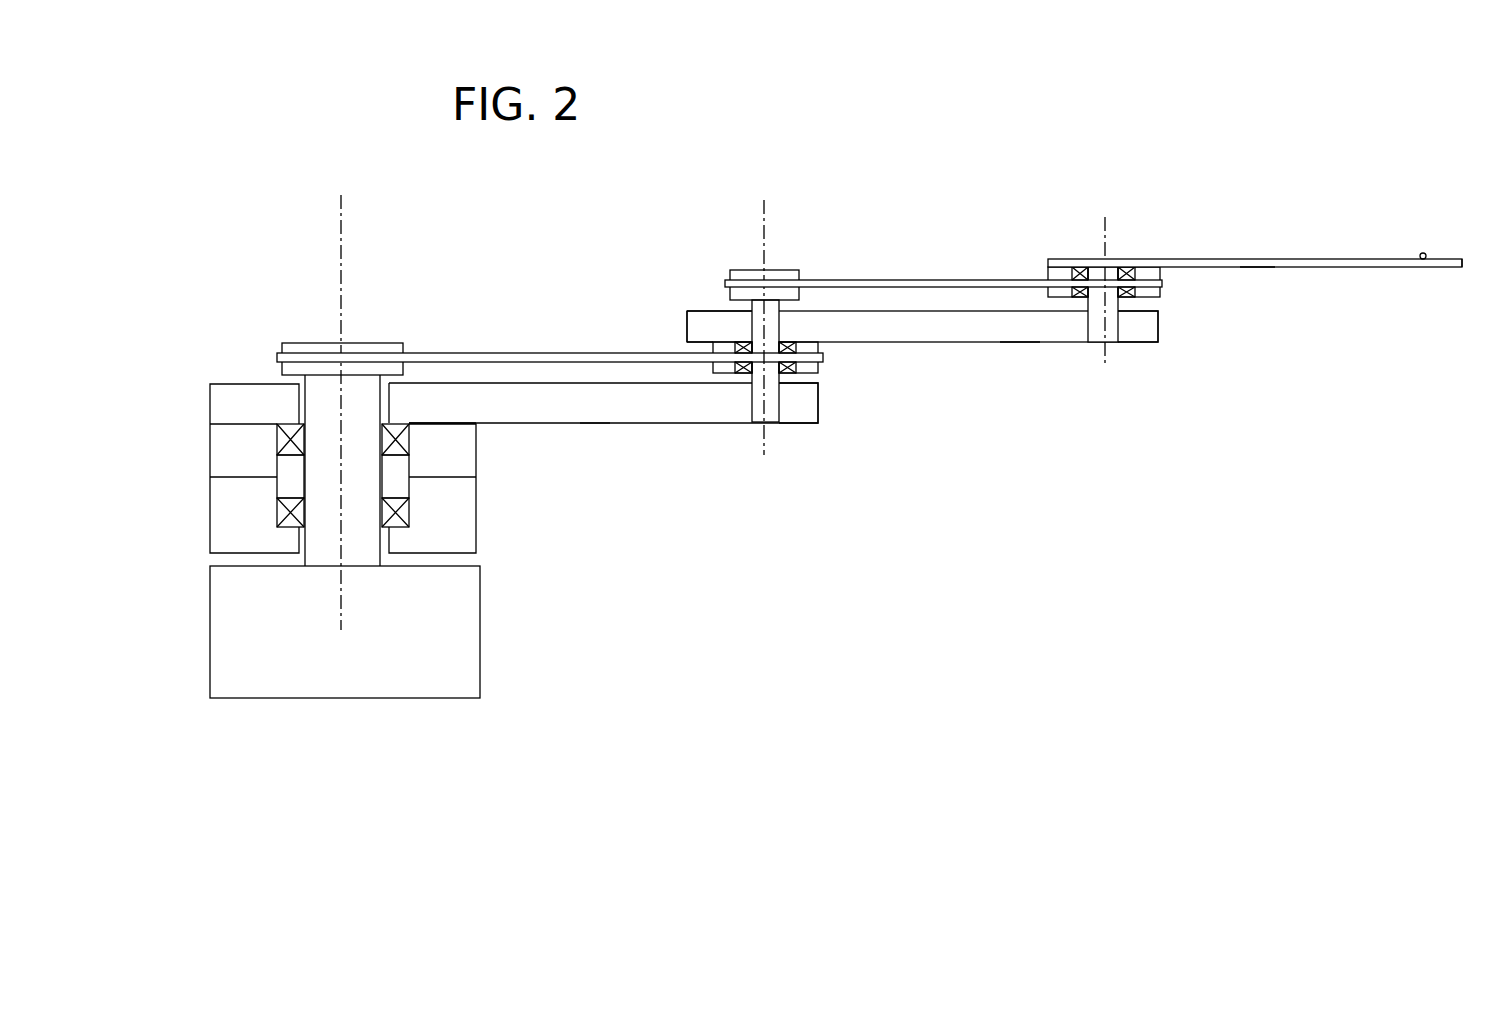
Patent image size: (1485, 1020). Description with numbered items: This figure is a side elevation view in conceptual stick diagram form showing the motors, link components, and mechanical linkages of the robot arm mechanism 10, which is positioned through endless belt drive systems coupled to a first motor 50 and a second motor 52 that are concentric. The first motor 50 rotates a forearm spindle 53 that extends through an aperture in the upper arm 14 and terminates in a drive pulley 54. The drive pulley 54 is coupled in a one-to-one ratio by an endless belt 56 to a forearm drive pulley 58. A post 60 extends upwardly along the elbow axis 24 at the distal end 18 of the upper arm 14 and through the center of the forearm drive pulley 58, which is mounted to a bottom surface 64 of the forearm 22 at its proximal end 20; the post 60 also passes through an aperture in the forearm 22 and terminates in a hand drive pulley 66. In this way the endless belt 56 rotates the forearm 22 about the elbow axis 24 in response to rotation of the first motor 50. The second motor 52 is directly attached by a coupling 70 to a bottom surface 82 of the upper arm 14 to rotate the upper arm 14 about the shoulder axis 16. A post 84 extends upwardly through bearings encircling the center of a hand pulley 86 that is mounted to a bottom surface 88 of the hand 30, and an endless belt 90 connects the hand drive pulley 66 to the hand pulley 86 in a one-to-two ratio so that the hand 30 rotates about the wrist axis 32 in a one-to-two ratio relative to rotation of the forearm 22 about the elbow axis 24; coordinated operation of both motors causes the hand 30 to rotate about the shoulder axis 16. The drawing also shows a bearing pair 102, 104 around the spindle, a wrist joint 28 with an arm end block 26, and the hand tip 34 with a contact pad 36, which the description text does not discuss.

The robot arm mechanism 10 is at (617, 634).
The upper arm 14 is at (667, 412).
The shoulder axis 16 is at (341, 209).
The distal end 18 is at (823, 417).
The proximal end 20 is at (688, 322).
The forearm 22 is at (875, 343).
The elbow axis 24 is at (764, 215).
The second arm end block 26 is at (1160, 325).
The wrist joint 28 is at (943, 248).
The hand 30 is at (1277, 259).
The wrist axis 32 is at (1105, 237).
The hand tip 34 is at (1466, 270).
The contact pad 36 is at (1421, 253).
The first motor 50 is at (480, 627).
The second motor 52 is at (476, 512).
The forearm spindle 53 is at (315, 466).
The drive pulley 54 is at (287, 351).
The endless belt 56 is at (610, 352).
The forearm drive pulley 58 is at (550, 345).
The post 60 is at (757, 333).
The bottom surface 64 is at (1022, 343).
The hand drive pulley 66 is at (743, 275).
The coupling 70 is at (476, 450).
The bottom surface 82 is at (593, 424).
The post 84 is at (1095, 300).
The hand pulley 86 is at (1058, 273).
The bottom surface 88 is at (1257, 268).
The endless belt 90 is at (901, 280).
The lower bearing 102 is at (277, 512).
The upper bearing 104 is at (277, 441).